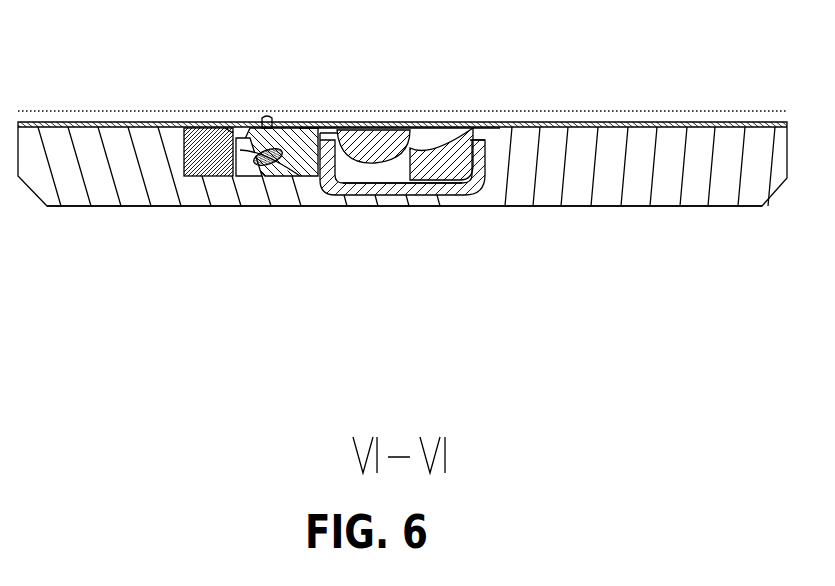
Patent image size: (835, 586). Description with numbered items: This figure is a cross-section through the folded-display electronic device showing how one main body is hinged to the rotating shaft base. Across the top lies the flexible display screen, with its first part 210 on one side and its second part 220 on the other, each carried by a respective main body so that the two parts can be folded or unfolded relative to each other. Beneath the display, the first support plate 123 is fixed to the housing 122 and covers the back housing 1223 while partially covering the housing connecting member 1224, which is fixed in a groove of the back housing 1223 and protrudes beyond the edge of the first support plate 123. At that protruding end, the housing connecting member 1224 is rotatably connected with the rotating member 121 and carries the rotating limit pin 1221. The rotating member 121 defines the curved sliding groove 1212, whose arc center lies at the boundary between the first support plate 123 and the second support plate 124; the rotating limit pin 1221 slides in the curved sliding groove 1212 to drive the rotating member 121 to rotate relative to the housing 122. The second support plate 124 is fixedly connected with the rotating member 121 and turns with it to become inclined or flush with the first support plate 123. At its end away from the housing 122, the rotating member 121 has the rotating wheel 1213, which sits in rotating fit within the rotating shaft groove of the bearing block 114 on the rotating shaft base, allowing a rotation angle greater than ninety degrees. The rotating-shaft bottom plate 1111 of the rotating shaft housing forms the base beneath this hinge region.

The first part 210 is at (62, 109).
The second part 220 is at (707, 115).
The first support plate 123 is at (123, 112).
The housing 122 is at (215, 297).
The back housing 1223 is at (112, 210).
The housing connecting member 1224 is at (225, 210).
The rotating limit pin 1221 is at (267, 112).
The curved sliding groove 1212 is at (290, 120).
The second support plate 124 is at (315, 125).
The rotating wheel 1213 is at (380, 121).
The bearing block 114 is at (450, 207).
The rotating-shaft bottom plate 1111 is at (380, 207).
The rotating member 121 is at (330, 208).